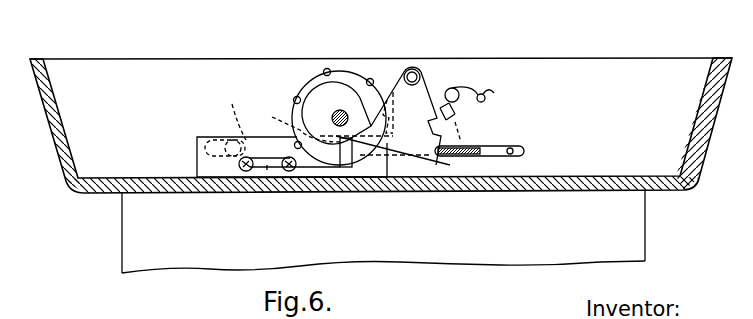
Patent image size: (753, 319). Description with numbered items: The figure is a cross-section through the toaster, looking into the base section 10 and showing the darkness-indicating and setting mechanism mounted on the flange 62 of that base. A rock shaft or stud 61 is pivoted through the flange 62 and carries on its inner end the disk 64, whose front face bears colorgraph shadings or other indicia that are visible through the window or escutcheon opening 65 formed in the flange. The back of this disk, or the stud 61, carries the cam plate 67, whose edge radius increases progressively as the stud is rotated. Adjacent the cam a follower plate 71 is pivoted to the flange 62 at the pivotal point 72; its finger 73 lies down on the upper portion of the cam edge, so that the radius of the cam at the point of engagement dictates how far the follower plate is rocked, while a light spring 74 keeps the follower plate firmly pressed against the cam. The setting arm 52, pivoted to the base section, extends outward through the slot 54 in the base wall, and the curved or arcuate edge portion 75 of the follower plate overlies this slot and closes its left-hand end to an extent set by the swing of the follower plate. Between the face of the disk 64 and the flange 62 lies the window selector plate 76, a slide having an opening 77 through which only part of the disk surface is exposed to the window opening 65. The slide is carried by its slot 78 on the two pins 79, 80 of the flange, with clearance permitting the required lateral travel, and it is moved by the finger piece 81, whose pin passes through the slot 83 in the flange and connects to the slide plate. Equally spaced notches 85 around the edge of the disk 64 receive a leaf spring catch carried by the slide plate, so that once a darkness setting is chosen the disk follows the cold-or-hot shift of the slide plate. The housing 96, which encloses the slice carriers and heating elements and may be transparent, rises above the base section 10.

The base section 10 is at (64, 185).
The setting arm 52 is at (480, 146).
The slot 54 is at (524, 148).
The rock shaft or stud 61 is at (341, 110).
The flange 62 is at (240, 74).
The disk 64 is at (314, 71).
The window or escutcheon opening 65 is at (346, 123).
The cam plate 67 is at (318, 98).
The follower plate 71 is at (408, 146).
The pivotal point 72 is at (413, 69).
The finger 73 is at (358, 144).
The light spring 74 is at (456, 88).
The curved or arcuate edge portion 75 is at (436, 158).
The window selector plate 76 is at (197, 162).
The opening 77 is at (369, 153).
The slot 78 is at (266, 171).
The pin 79 is at (244, 171).
The pin 80 is at (291, 171).
The finger piece 81 is at (243, 138).
The slot 83 is at (216, 139).
The notches 85 is at (329, 69).
The housing 96 is at (121, 257).